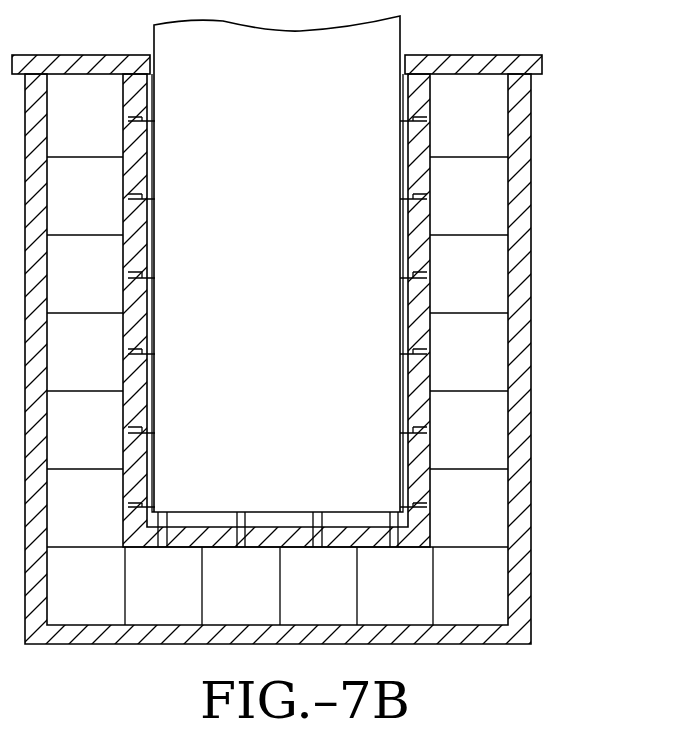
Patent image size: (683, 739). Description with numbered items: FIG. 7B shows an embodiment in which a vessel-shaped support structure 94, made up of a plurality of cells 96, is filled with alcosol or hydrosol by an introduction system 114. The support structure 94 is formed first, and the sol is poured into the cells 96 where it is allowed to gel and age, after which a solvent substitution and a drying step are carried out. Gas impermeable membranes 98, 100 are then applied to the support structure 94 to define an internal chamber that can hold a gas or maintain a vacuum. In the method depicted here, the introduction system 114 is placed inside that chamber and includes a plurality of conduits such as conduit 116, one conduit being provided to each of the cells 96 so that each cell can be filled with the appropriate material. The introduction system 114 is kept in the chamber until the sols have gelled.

The support structure 94 is at (553, 98).
The cells 96 is at (495, 355).
The gas impermeable membrane 98 is at (531, 528).
The gas impermeable membrane 100 is at (414, 538).
The introduction system 114 is at (405, 40).
The conduit 116 is at (403, 197).